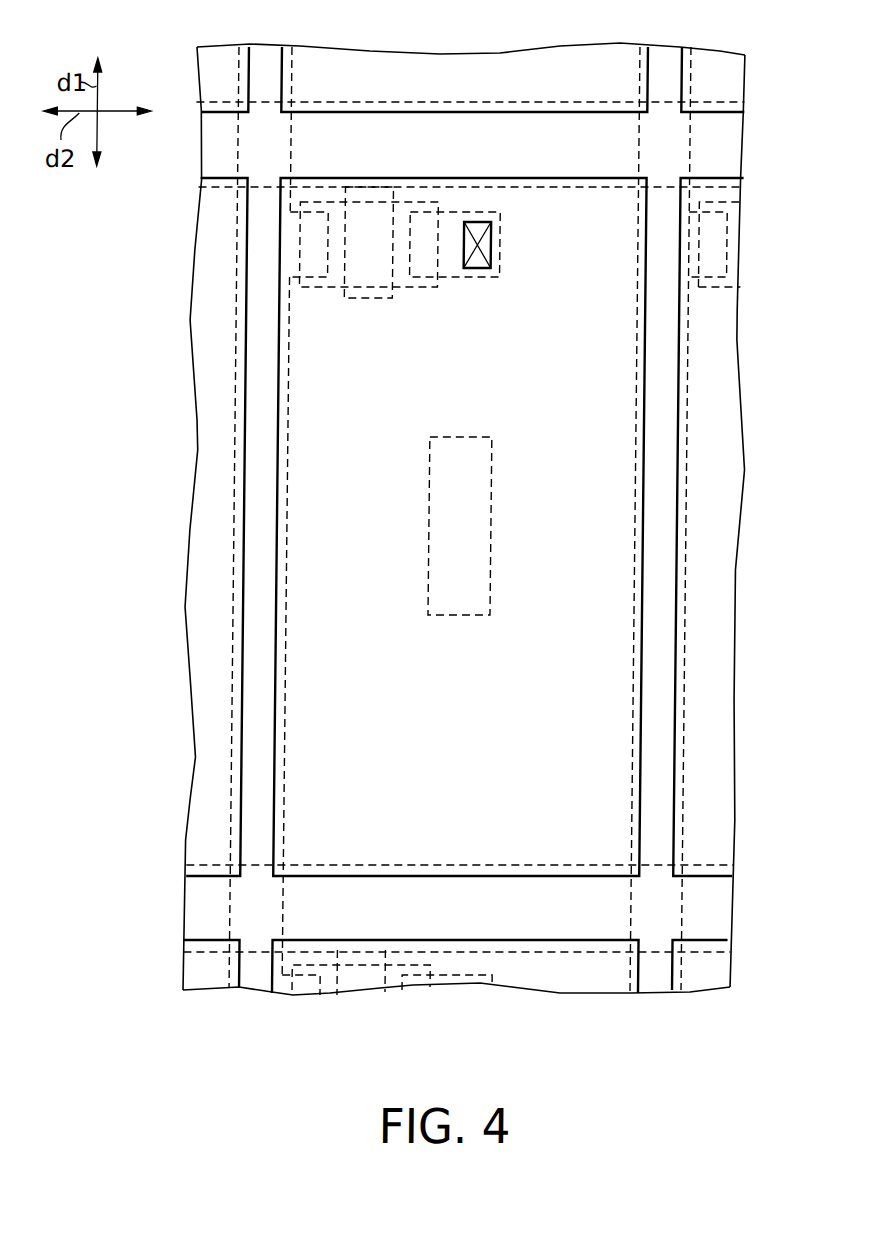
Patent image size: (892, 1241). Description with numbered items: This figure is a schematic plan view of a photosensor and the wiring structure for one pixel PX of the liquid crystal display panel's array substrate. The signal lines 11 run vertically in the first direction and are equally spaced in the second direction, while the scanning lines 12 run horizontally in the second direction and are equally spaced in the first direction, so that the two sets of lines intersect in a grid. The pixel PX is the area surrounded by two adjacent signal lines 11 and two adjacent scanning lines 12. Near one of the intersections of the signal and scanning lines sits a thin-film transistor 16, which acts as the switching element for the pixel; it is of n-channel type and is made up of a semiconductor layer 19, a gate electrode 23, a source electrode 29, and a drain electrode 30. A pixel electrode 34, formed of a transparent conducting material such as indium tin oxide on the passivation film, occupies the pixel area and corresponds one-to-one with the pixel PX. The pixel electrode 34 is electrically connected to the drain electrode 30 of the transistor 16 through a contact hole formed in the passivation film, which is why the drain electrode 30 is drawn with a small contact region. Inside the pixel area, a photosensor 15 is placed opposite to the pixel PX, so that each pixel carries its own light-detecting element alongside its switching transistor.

The signal line 11 is at (239, 425).
The scanning line 12 is at (438, 100).
The photosensor 15 is at (501, 513).
The thin-film transistor 16 is at (457, 331).
The semiconductor layer 19 is at (437, 287).
The gate electrode 23 is at (369, 300).
The source electrode 29 is at (337, 252).
The drain electrode 30 is at (502, 242).
The pixel electrode 34 is at (650, 538).
The pixel PX is at (662, 371).